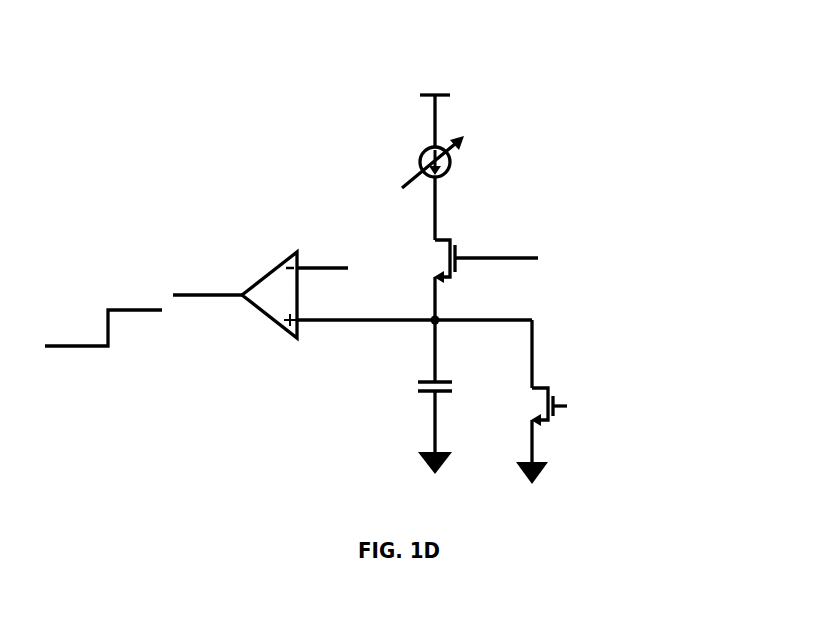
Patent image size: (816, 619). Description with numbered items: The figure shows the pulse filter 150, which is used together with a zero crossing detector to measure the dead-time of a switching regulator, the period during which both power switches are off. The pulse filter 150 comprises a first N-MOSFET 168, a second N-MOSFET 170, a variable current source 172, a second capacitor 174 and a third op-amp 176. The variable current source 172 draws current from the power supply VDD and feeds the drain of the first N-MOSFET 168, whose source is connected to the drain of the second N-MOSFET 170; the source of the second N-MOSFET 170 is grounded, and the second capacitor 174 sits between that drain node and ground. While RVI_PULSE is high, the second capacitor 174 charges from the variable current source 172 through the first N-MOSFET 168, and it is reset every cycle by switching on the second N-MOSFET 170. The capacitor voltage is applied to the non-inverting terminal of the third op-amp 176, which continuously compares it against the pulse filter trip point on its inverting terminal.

The pulse filter 150 is at (210, 134).
The first N-MOSFET 168 is at (447, 240).
The second N-MOSFET 170 is at (537, 388).
The variable current source 172 is at (432, 147).
The second capacitor 174 is at (437, 378).
The third op-amp 176 is at (273, 265).